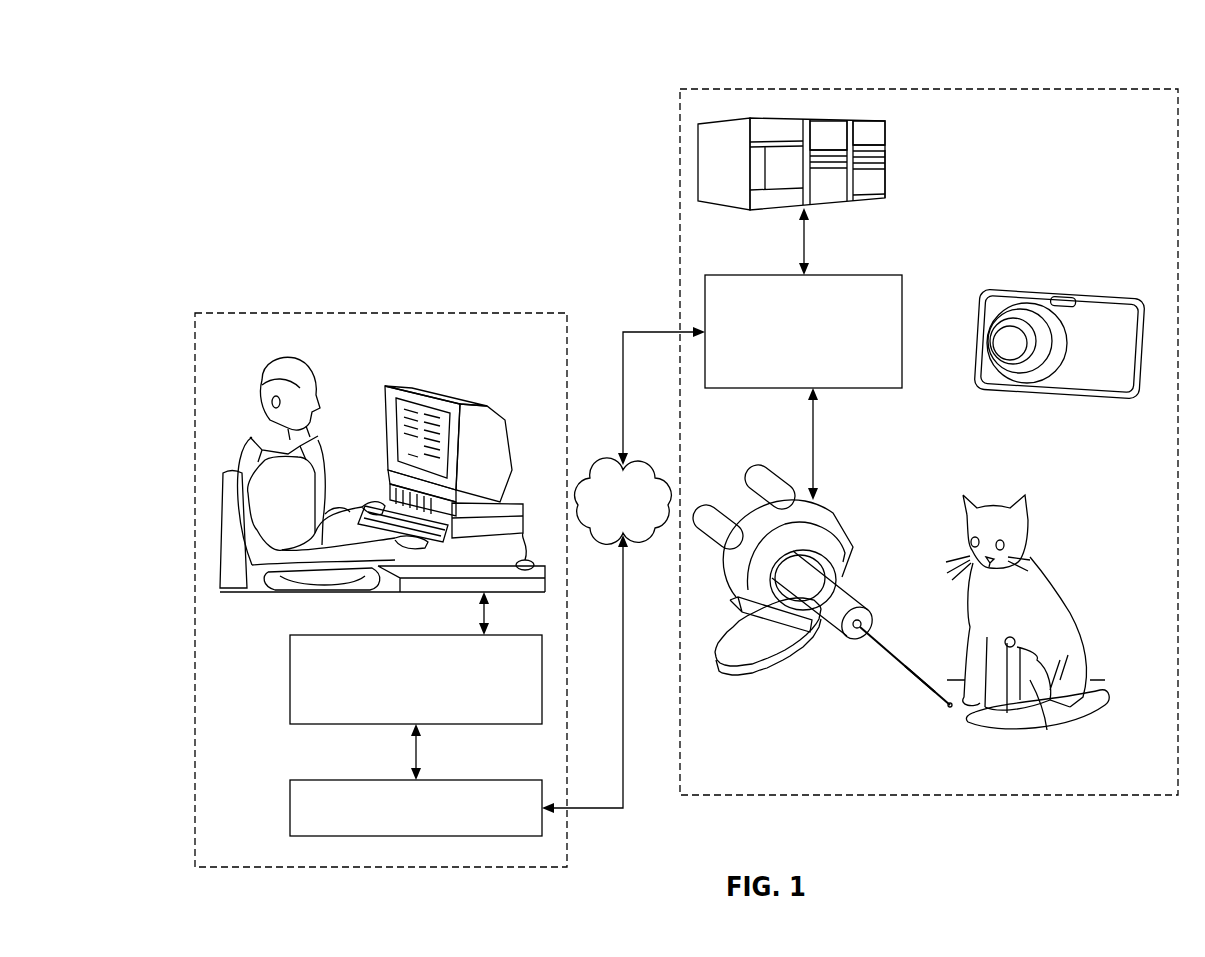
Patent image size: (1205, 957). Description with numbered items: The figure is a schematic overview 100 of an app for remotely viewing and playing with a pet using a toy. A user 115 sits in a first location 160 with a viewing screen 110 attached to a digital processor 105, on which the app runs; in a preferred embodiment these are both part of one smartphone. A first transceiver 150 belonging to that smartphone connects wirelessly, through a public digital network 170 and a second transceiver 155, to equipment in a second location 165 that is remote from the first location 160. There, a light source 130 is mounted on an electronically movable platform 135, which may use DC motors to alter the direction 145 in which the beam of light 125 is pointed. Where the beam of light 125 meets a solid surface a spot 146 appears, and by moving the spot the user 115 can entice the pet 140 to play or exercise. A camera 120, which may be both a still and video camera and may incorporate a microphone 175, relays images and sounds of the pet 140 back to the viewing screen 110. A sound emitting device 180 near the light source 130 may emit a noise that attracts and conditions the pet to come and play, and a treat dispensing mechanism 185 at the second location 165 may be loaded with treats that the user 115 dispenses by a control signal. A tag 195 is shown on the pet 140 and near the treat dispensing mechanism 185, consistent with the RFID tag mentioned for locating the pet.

The pet interaction system 100 is at (262, 126).
The digital processor 105 is at (356, 635).
The viewing screen 110 is at (434, 384).
The user 115 is at (285, 355).
The camera 120 is at (1019, 272).
The beam of light 125 is at (913, 664).
The light source 130 is at (846, 648).
The electronically movable platform 135 is at (750, 657).
The pet 140 is at (1027, 680).
The direction 145 is at (920, 683).
The spot 146 is at (948, 708).
The first transceiver 150 is at (356, 780).
The second transceiver 155 is at (774, 275).
The first location 160 is at (194, 806).
The second location 165 is at (994, 89).
The public digital network 170 is at (607, 465).
The microphone 175 is at (887, 182).
The sound emitting device 180 is at (870, 131).
The treat dispensing mechanism 185 is at (698, 152).
The tag 195 is at (1015, 642).